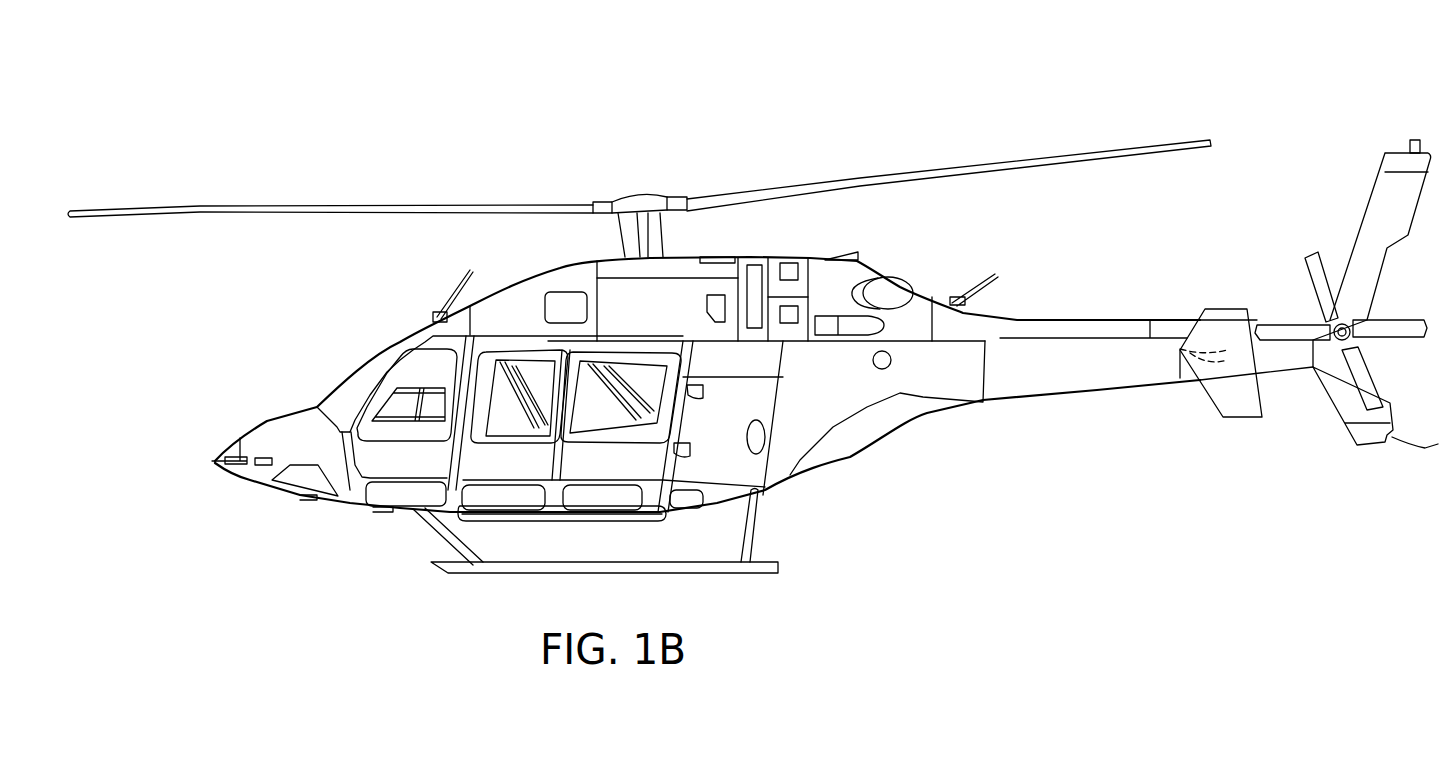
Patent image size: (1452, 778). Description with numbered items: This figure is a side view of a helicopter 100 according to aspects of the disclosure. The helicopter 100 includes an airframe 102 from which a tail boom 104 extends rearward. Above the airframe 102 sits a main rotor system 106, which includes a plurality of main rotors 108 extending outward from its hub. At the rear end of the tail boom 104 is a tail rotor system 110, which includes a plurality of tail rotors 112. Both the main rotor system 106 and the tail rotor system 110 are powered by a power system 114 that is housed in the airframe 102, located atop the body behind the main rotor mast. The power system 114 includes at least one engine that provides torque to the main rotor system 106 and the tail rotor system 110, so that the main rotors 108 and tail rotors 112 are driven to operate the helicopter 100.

The helicopter 100 is at (210, 88).
The airframe 102 is at (835, 470).
The tail boom 104 is at (1130, 400).
The main rotor system 106 is at (655, 176).
The main rotors 108 is at (326, 206).
The tail rotor system 110 is at (1296, 298).
The tail rotors 112 is at (1404, 320).
The power system 114 is at (792, 258).